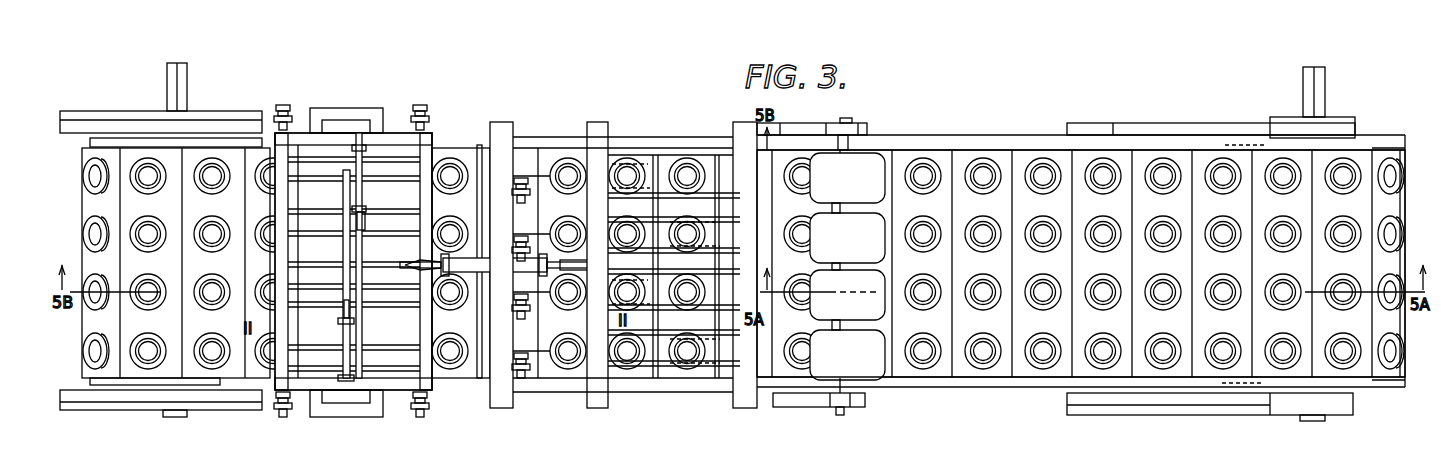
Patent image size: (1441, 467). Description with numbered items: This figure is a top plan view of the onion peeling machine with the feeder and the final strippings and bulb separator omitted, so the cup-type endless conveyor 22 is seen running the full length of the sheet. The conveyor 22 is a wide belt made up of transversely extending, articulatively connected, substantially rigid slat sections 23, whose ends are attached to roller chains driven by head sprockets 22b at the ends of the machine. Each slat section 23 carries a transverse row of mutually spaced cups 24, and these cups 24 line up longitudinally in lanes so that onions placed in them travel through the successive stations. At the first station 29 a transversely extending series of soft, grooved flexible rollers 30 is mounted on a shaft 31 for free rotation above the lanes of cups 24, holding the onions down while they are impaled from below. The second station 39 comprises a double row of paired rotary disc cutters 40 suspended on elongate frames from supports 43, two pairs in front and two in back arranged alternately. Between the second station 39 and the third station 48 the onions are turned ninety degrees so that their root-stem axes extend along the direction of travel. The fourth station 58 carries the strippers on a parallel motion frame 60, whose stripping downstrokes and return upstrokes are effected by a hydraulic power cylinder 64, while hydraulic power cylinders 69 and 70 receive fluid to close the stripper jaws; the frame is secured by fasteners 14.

The bolts / end plates 14 is at (284, 118).
The endless conveyor 22 is at (1046, 126).
The head sprockets 22b is at (1383, 148).
The slat sections 23 is at (1015, 155).
The cups 24 is at (1094, 263).
The first station 29 is at (890, 398).
The flexible rollers 30 is at (855, 218).
The shaft 31 is at (840, 415).
The second station 39 is at (681, 132).
The rotary disc cutters 40 is at (645, 172).
The supports 43 is at (660, 335).
The third station 48 is at (546, 130).
The fourth station 58 is at (346, 104).
The parallel motion frame 60 is at (392, 392).
The hydraulic power cylinder 64 is at (472, 280).
The hydraulic power cylinder 69 is at (340, 368).
The hydraulic power cylinder 70 is at (360, 168).